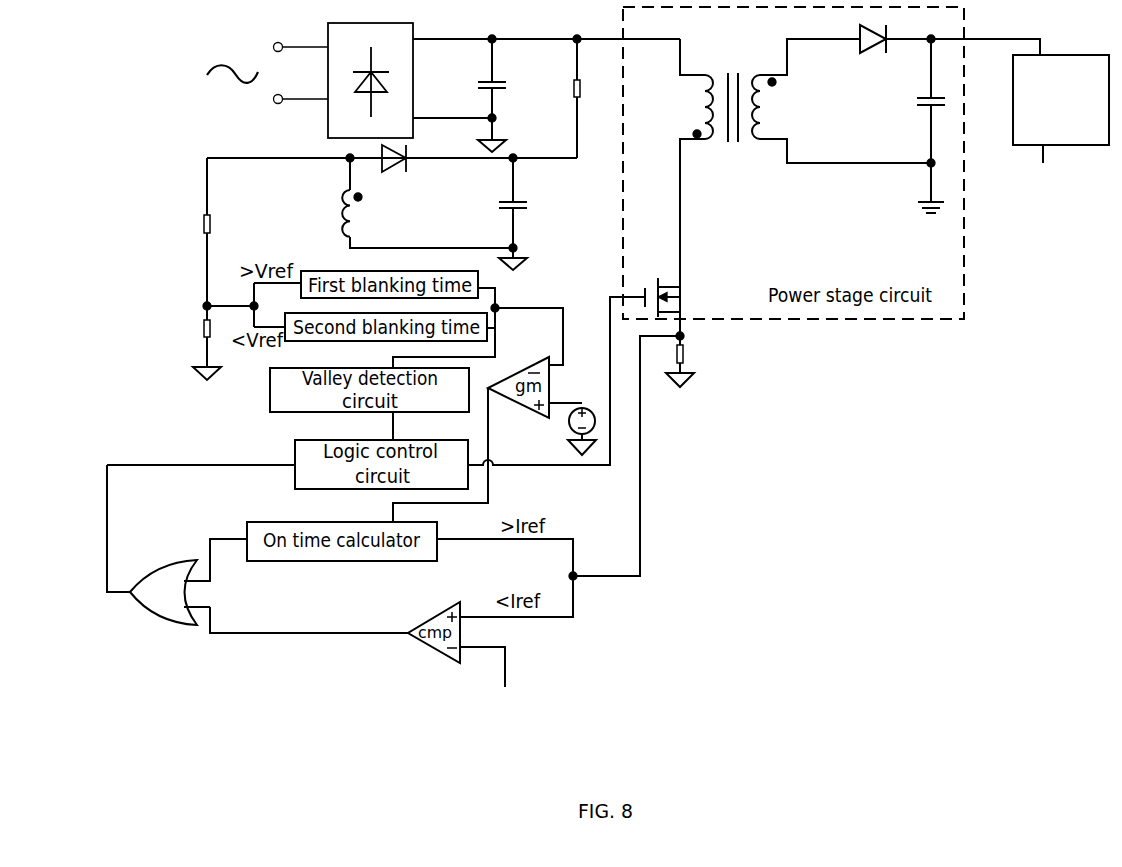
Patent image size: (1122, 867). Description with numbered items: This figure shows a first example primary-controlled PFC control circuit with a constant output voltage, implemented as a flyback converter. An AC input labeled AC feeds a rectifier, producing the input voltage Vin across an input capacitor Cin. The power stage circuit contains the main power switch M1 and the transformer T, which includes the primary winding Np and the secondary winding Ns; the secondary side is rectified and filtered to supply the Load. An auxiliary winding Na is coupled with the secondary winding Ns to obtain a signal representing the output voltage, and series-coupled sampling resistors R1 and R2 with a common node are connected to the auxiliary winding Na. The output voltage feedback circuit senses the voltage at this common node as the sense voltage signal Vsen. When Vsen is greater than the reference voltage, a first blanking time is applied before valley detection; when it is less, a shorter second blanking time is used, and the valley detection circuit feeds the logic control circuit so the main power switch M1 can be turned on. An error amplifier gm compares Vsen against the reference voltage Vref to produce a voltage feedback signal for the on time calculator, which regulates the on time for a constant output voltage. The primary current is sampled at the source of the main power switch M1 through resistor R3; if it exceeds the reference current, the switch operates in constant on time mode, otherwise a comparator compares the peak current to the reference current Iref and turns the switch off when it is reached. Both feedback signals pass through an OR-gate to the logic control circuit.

The AC input source AC is at (267, 71).
The input voltage Vin is at (520, 20).
The input capacitor Cin is at (509, 95).
The auxiliary winding Na is at (401, 203).
The sampling resistor R1 is at (189, 232).
The sampling resistor R2 is at (192, 343).
The current sense resistor R3 is at (700, 363).
The sense voltage signal Vsen is at (556, 291).
The reference voltage Vref is at (558, 426).
The reference current Iref is at (503, 667).
The transformer T is at (734, 92).
The primary winding Np is at (685, 163).
The secondary winding Ns is at (841, 101).
The load Load is at (1061, 109).
The main power switch M1 is at (691, 299).